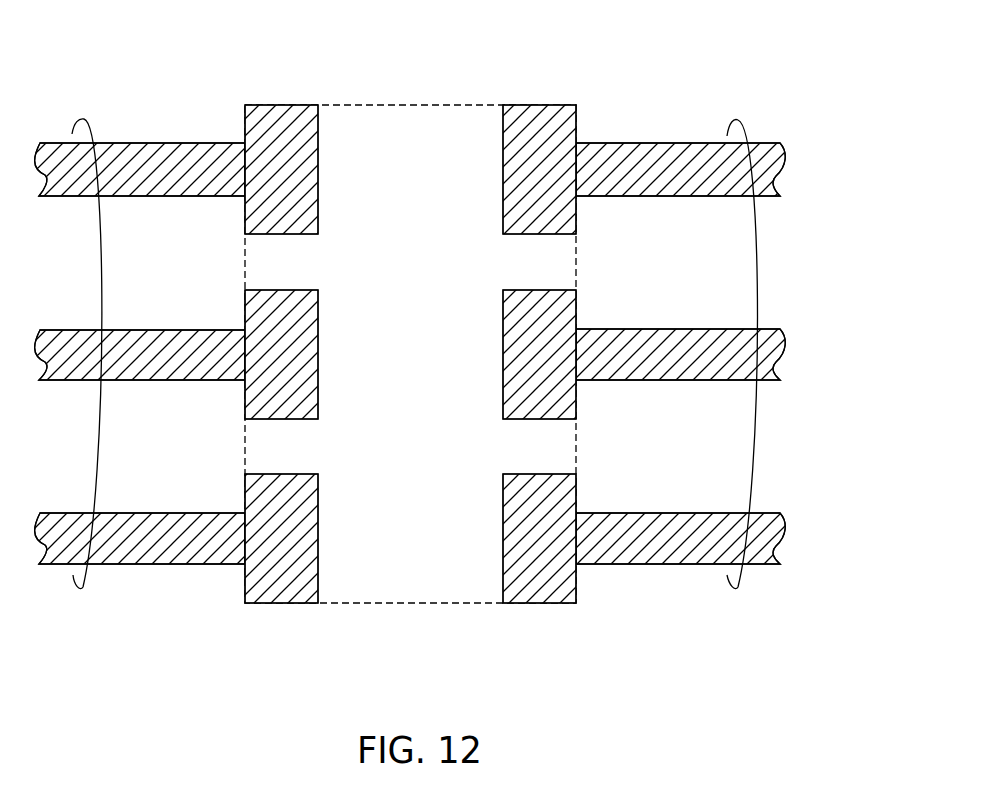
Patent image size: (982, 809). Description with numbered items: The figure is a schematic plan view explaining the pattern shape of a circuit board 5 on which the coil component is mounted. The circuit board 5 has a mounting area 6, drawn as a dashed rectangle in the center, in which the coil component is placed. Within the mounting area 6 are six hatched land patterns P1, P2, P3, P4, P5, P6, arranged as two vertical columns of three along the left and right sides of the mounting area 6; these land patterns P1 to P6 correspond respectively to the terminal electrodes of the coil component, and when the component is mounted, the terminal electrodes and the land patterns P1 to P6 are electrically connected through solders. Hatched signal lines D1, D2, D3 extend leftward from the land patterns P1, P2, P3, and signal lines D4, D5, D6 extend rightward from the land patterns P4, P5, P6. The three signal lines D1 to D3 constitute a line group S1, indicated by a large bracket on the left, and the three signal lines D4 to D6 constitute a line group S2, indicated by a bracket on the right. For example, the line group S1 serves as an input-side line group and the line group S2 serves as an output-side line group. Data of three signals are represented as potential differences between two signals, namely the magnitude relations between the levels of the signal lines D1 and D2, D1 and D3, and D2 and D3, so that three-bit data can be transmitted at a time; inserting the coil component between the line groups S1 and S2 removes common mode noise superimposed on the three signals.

The circuit board 5 is at (660, 26).
The mounting area 6 is at (413, 604).
The signal line D1 is at (157, 564).
The signal line D2 is at (157, 380).
The signal line D3 is at (157, 196).
The signal line D4 is at (677, 564).
The signal line D5 is at (675, 380).
The signal line D6 is at (675, 196).
The land pattern P1 is at (318, 534).
The land pattern P2 is at (318, 352).
The land pattern P3 is at (318, 168).
The land pattern P4 is at (503, 541).
The land pattern P5 is at (503, 360).
The land pattern P6 is at (503, 176).
The line group S1 is at (83, 590).
The line group S2 is at (738, 590).